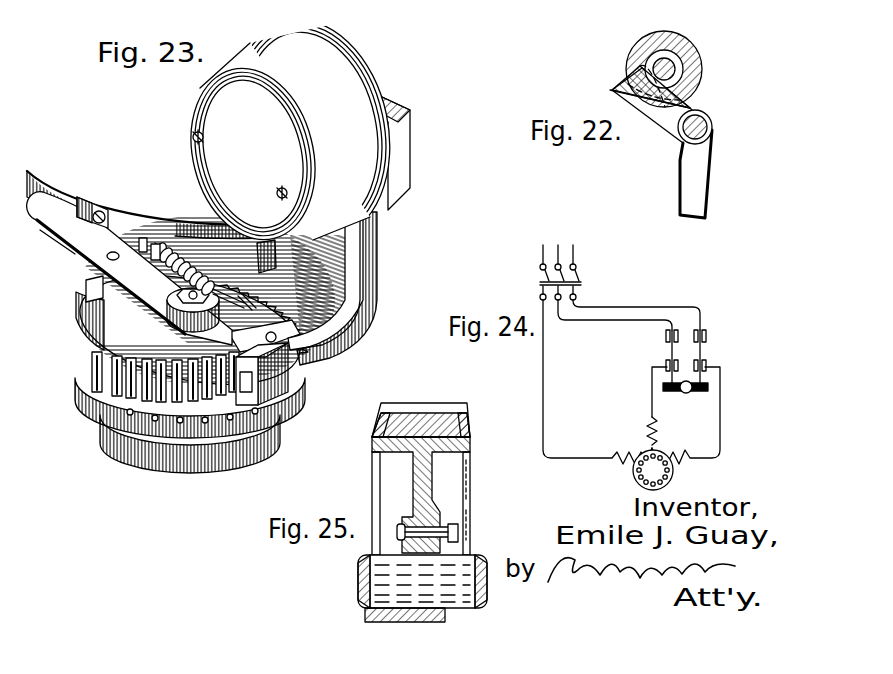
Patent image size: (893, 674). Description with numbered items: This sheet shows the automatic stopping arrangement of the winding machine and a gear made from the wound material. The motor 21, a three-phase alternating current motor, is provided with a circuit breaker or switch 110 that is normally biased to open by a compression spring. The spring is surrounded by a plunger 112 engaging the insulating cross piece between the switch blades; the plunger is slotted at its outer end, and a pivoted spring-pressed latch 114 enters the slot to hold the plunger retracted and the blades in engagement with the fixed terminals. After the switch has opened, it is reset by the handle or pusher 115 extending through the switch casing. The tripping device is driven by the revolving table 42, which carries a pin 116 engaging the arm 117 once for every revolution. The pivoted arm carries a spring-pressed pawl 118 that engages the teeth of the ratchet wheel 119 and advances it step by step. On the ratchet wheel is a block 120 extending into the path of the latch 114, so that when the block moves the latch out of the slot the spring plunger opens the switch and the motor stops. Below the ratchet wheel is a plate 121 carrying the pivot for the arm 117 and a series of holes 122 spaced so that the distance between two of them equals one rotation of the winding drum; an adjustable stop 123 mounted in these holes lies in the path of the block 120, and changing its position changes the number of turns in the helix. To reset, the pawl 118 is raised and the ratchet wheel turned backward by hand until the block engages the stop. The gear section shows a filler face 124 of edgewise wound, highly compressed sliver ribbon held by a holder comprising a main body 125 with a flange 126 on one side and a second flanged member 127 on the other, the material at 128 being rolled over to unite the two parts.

In FIG. 24, the motor 21 is at (665, 470).
In FIG. 23, the revolving table 42 is at (155, 223).
In FIG. 23, the circuit breaker or switch 110 is at (292, 129).
In FIG. 24, the circuit breaker or switch 110 is at (706, 349).
In FIG. 22, the plunger 112 is at (698, 70).
In FIG. 23, the pivoted spring-pressed latch 114 is at (258, 253).
In FIG. 22, the pivoted spring-pressed latch 114 is at (705, 175).
In FIG. 23, the handle or pusher 115 is at (230, 205).
In FIG. 23, the pin 116 is at (108, 202).
In FIG. 23, the arm 117 is at (70, 256).
In FIG. 23, the spring-pressed pawl 118 is at (78, 310).
In FIG. 23, the ratchet wheel 119 is at (108, 332).
In FIG. 23, the block 120 is at (296, 373).
In FIG. 23, the plate 121 is at (290, 416).
In FIG. 23, the holes 122 is at (88, 366).
In FIG. 23, the adjustable stop 123 is at (105, 412).
In FIG. 25, the filler face 124 is at (428, 410).
In FIG. 25, the main body 125 is at (466, 478).
In FIG. 25, the flange 126 is at (470, 427).
In FIG. 25, the second flanged member 127 is at (384, 425).
In FIG. 25, the rolled-over material 128 is at (395, 453).